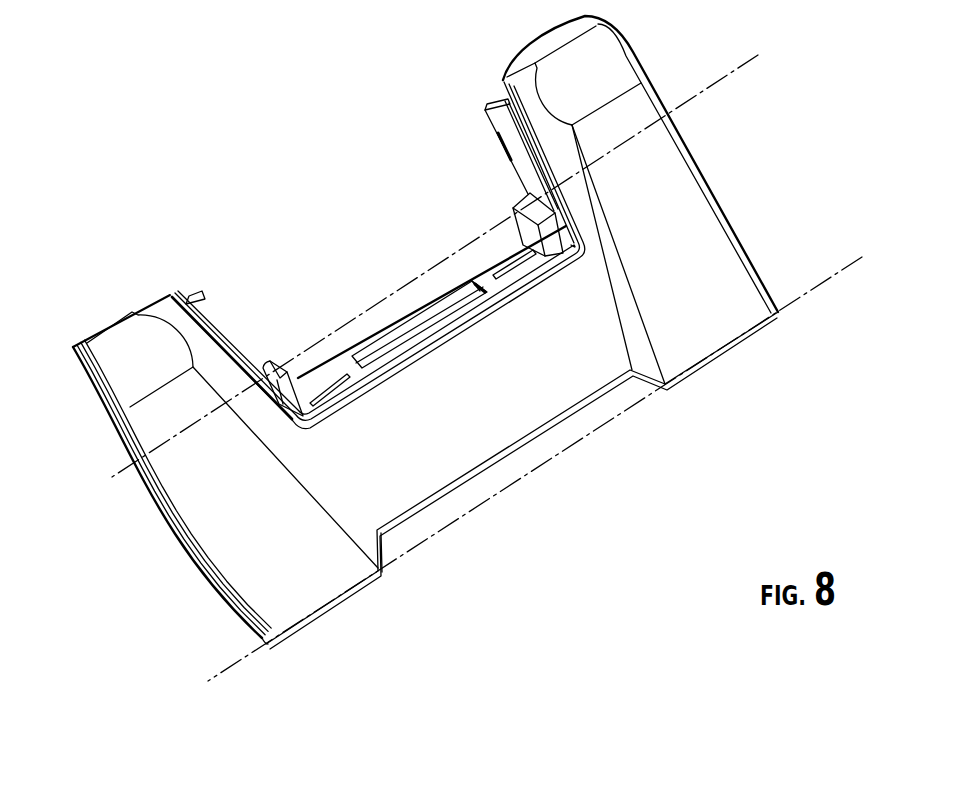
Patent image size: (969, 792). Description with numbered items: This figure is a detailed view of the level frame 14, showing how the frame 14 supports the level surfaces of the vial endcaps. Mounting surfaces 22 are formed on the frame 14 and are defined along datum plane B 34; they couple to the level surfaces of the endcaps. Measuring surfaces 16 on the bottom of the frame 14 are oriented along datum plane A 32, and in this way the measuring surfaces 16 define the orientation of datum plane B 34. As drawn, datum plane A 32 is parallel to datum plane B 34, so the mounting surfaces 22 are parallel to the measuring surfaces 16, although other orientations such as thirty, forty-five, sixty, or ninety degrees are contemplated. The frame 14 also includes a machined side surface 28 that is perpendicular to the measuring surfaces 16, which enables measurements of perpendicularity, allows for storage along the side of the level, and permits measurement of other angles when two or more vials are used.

The frame 14 is at (548, 403).
The measuring surfaces 16 is at (710, 360).
The mounting surfaces 22 is at (524, 199).
The machined side surface 28 is at (114, 412).
The datum plane A 32 is at (807, 292).
The datum plane B 34 is at (698, 95).